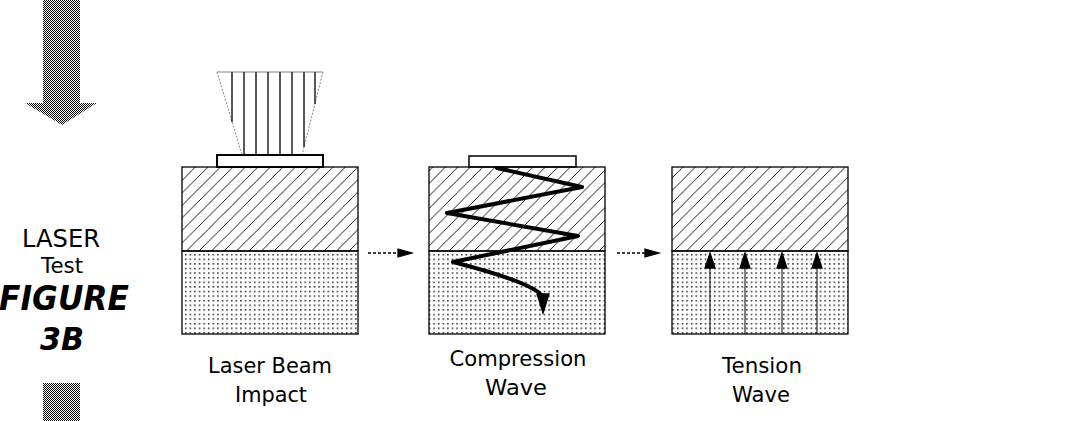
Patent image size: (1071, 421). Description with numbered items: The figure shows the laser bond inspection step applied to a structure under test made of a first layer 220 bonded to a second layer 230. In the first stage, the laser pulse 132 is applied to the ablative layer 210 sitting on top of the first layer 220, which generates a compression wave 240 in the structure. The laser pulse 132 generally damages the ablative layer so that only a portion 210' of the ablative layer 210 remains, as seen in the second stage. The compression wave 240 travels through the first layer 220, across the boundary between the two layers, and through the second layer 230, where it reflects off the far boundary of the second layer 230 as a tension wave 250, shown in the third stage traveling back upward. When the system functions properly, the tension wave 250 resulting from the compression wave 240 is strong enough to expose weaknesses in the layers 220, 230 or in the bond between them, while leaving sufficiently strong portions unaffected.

The laser pulse 132 is at (277, 98).
The ablative layer 210 is at (316, 119).
The portion of the ablative layer 210' is at (570, 119).
The first layer 220 is at (350, 249).
The second layer 230 is at (350, 332).
The compression wave 240 is at (583, 188).
The tension wave 250 is at (712, 310).